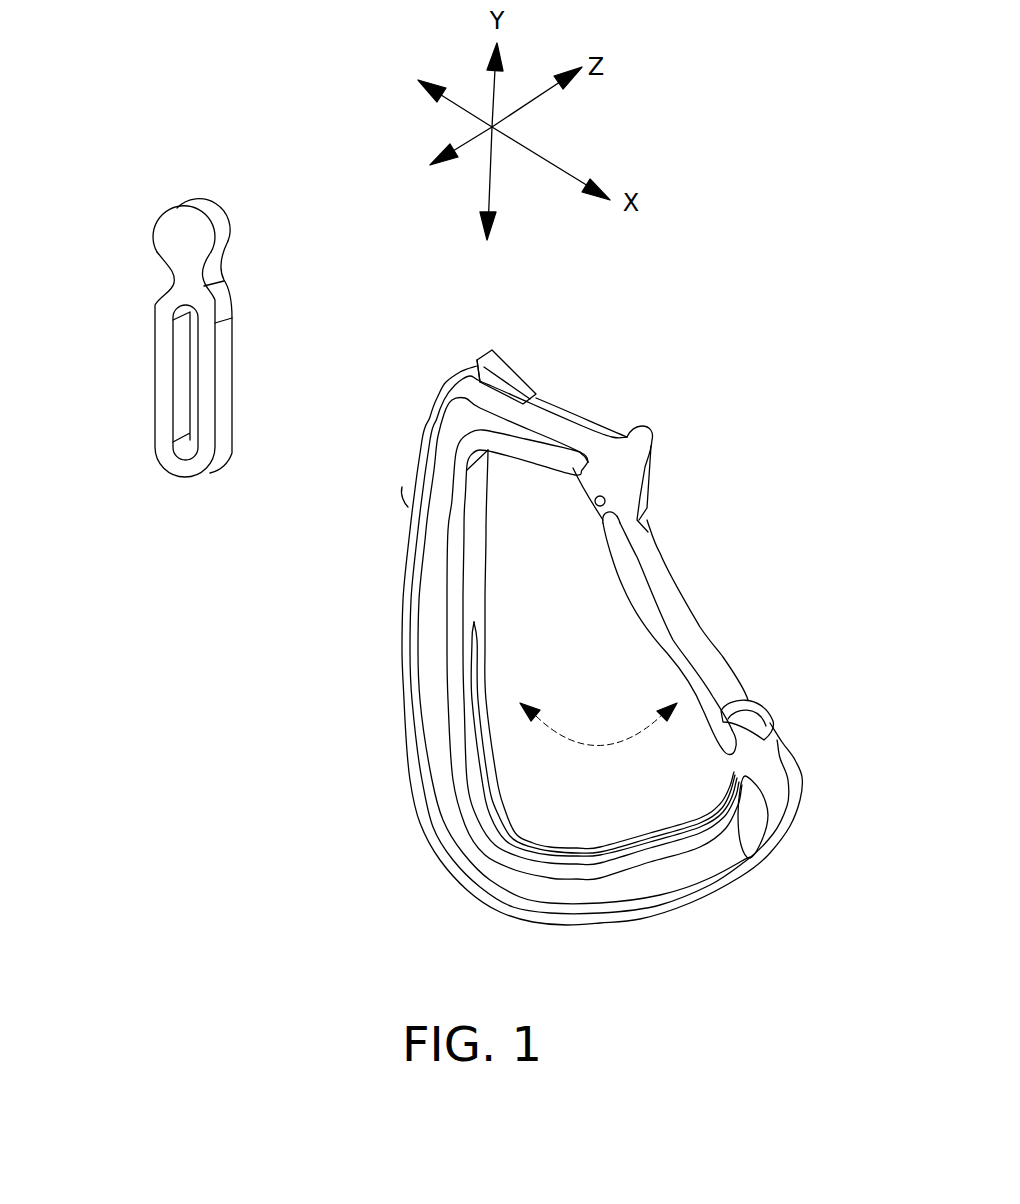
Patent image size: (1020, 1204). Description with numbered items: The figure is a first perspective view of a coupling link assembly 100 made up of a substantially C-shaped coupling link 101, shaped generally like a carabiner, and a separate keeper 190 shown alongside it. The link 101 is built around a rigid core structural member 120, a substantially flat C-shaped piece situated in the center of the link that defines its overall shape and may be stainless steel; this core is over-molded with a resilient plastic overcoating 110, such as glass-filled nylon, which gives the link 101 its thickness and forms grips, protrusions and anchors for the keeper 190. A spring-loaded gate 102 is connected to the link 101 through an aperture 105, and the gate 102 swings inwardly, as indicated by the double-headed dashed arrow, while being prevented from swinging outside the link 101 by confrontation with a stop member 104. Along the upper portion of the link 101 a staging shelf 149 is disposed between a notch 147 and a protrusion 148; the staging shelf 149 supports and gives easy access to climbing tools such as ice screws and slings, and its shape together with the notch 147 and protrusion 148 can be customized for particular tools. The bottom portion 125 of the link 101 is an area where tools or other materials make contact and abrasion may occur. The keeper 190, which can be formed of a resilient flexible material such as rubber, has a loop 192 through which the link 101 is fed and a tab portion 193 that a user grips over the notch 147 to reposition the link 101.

The coupling link assembly 100 is at (813, 357).
The coupling link 101 is at (354, 596).
The spring-loaded gate 102 is at (696, 625).
The stop member 104 is at (792, 693).
The aperture 105 is at (598, 521).
The plastic overcoating 110 is at (437, 471).
The structural member 120 is at (497, 798).
The bottom portion 125 is at (580, 845).
The notch 147 is at (502, 352).
The protrusion 148 is at (655, 431).
The staging shelf 149 is at (533, 368).
The keeper 190 is at (212, 323).
The loop 192 is at (155, 390).
The tab portion 193 is at (153, 238).